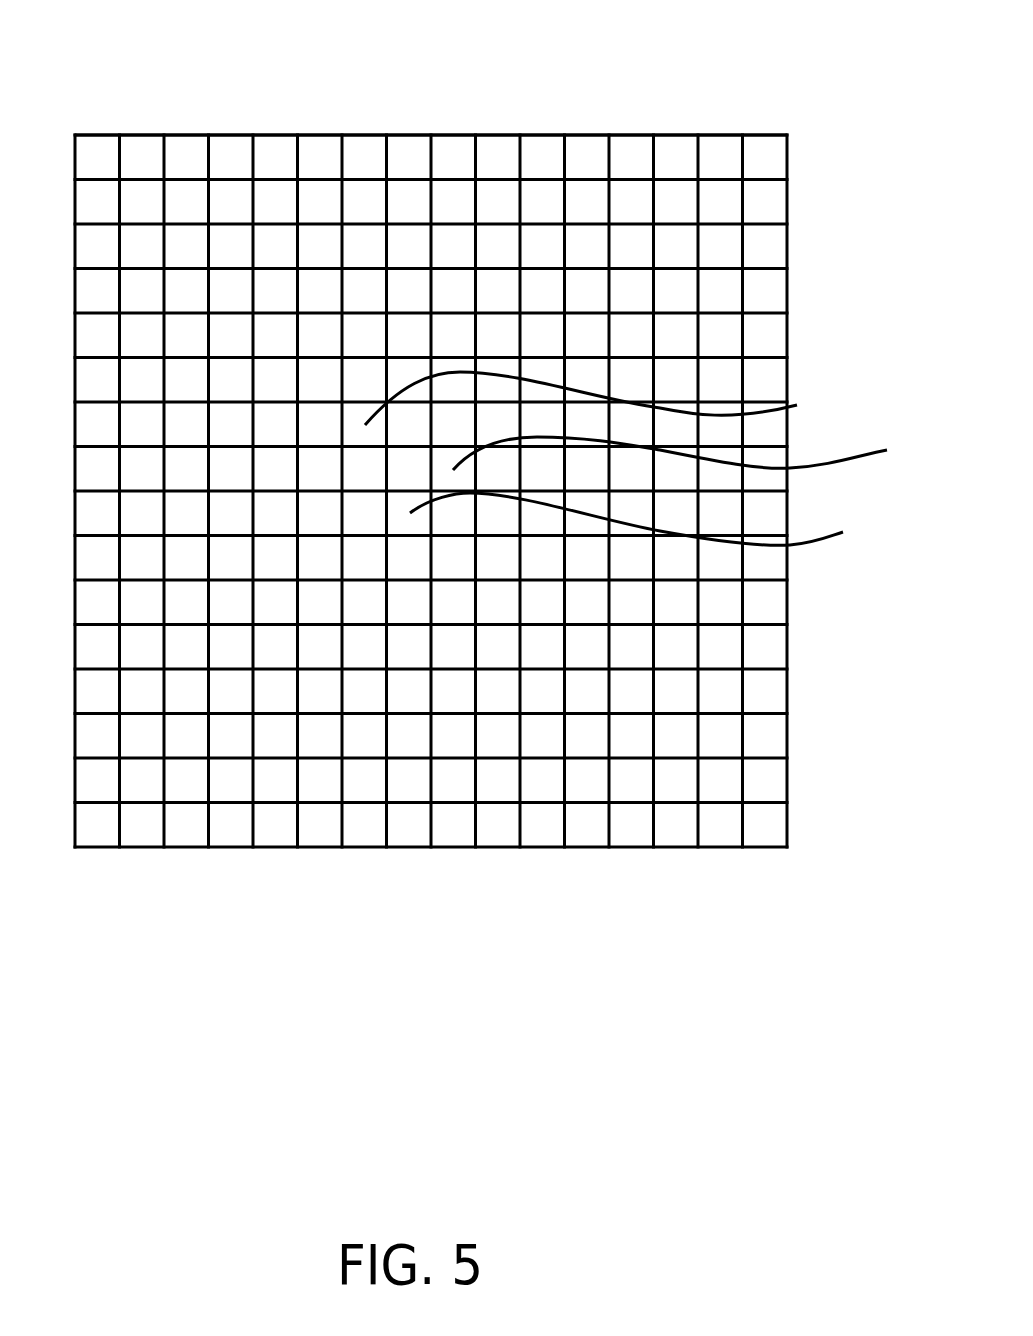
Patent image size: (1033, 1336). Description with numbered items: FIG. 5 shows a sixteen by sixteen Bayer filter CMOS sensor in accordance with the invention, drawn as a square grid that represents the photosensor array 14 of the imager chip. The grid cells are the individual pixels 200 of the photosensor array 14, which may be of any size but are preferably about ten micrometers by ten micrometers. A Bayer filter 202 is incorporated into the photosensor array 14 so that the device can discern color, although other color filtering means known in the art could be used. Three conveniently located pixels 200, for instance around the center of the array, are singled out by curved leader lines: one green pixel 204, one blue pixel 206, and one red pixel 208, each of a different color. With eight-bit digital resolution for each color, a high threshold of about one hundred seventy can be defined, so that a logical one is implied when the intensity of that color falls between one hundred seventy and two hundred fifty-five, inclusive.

The photosensor array 14 is at (431, 476).
The pixels 200 is at (495, 827).
The Bayer filter 202 is at (476, 135).
The green pixel 204 is at (607, 398).
The blue pixel 206 is at (693, 452).
The red pixel 208 is at (652, 519).